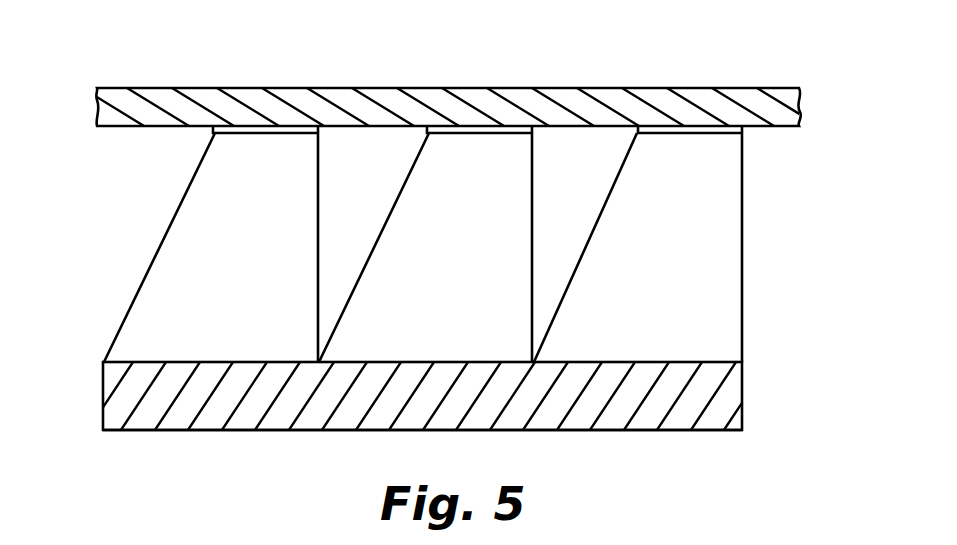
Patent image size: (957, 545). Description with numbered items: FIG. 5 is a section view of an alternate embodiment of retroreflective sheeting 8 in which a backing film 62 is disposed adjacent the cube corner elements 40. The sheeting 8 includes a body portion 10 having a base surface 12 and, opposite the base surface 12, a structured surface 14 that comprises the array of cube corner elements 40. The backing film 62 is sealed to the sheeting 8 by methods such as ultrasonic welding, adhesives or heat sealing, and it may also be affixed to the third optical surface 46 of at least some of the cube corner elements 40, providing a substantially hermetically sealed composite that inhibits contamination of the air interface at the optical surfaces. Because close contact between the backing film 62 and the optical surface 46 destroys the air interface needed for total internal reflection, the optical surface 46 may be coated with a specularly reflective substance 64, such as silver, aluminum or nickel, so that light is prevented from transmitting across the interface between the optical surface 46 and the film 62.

The retroreflective sheeting 8 is at (145, 209).
The body portion 10 is at (735, 400).
The base surface 12 is at (655, 432).
The structured surface 14 is at (472, 122).
The cube corner elements 40 is at (707, 255).
The third optical surface 46 is at (258, 133).
The backing film 62 is at (713, 88).
The specularly reflective substance 64 is at (743, 131).